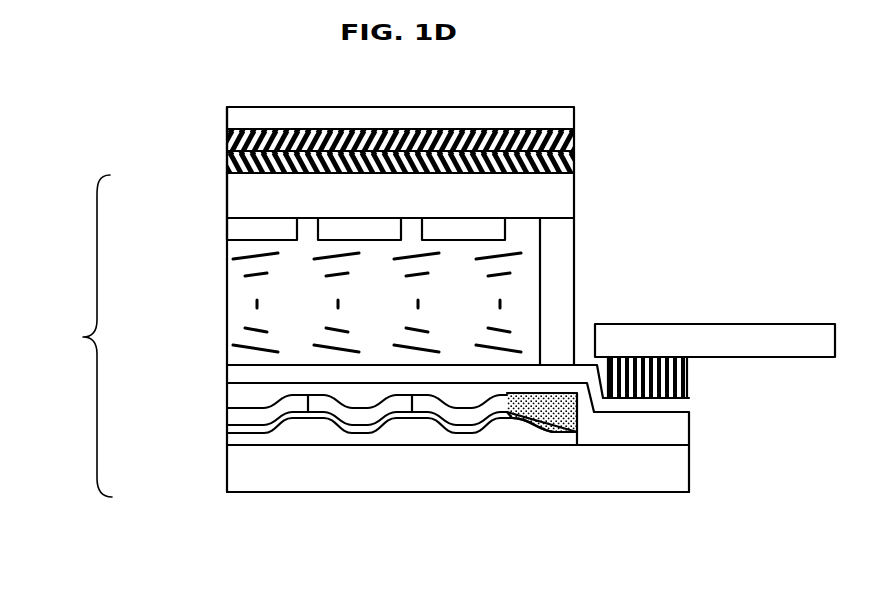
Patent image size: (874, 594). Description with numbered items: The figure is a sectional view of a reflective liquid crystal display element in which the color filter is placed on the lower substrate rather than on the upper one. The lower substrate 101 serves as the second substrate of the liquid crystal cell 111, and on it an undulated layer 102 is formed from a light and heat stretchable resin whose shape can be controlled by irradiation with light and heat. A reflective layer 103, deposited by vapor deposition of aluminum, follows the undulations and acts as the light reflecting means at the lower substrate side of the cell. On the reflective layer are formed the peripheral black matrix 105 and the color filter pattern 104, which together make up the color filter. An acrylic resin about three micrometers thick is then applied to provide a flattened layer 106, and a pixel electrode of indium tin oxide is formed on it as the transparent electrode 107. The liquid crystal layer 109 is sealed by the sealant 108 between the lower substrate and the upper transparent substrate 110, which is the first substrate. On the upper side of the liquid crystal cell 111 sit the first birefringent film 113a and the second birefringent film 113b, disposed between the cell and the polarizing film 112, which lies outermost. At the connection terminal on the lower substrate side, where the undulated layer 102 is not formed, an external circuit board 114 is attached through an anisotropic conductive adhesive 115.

The lower substrate 101 is at (663, 463).
The undulated layer 102 is at (232, 437).
The reflective layer 103 is at (232, 422).
The color filter pattern 104 is at (252, 418).
The peripheral black matrix 105 is at (557, 433).
The flattened layer 106 is at (682, 432).
The transparent electrode 107 is at (233, 230).
The sealant 108 is at (558, 246).
The liquid crystal layer 109 is at (245, 291).
The upper transparent substrate 110 is at (563, 197).
The liquid crystal cell 111 is at (65, 336).
The polarizing film 112 is at (520, 112).
The first birefringent film 113a is at (570, 131).
The second birefringent film 113b is at (565, 158).
The external circuit board 114 is at (682, 342).
The anisotropic conductive adhesive 115 is at (677, 380).